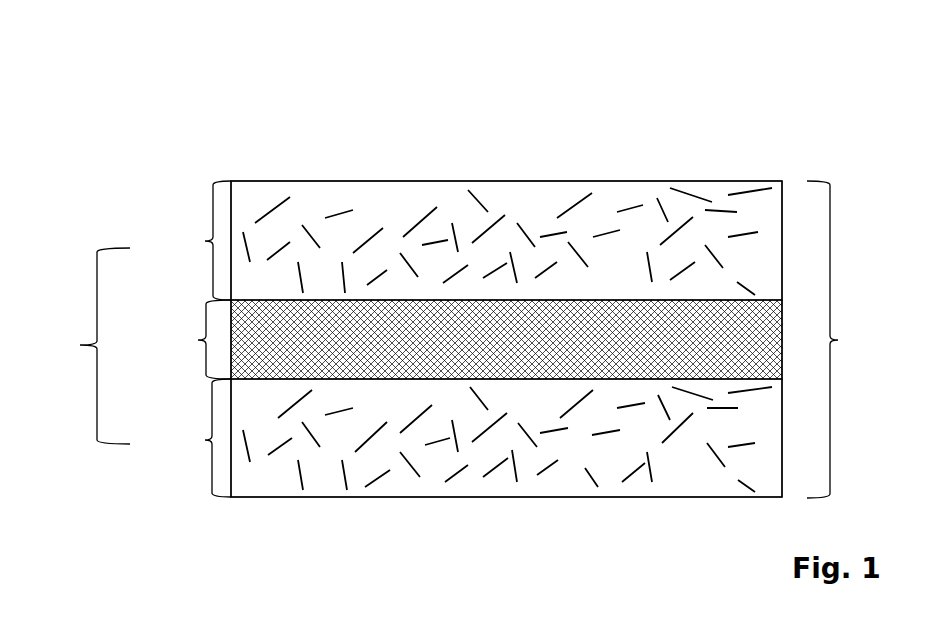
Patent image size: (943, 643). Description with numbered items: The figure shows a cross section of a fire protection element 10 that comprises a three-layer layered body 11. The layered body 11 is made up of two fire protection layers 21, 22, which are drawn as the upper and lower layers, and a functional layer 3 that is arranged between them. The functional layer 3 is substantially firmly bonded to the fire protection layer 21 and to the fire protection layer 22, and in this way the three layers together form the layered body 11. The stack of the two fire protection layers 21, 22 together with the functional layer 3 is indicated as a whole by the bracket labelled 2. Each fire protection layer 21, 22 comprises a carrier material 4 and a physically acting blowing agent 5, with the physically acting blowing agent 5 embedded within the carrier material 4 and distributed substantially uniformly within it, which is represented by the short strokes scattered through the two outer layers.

The fire protection element 10 is at (600, 131).
The layered body 11 is at (838, 340).
The layer structure 2 is at (407, 355).
The fire protection layer 21 is at (205, 241).
The fire protection layer 22 is at (205, 440).
The functional layer 3 is at (198, 340).
The carrier material 4 is at (461, 358).
The physically acting blowing agent 5 is at (483, 207).